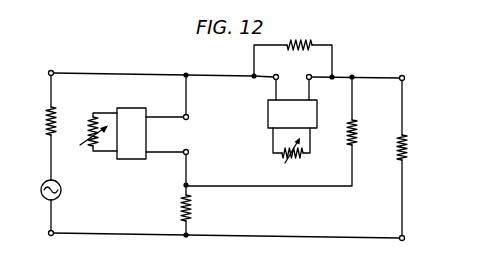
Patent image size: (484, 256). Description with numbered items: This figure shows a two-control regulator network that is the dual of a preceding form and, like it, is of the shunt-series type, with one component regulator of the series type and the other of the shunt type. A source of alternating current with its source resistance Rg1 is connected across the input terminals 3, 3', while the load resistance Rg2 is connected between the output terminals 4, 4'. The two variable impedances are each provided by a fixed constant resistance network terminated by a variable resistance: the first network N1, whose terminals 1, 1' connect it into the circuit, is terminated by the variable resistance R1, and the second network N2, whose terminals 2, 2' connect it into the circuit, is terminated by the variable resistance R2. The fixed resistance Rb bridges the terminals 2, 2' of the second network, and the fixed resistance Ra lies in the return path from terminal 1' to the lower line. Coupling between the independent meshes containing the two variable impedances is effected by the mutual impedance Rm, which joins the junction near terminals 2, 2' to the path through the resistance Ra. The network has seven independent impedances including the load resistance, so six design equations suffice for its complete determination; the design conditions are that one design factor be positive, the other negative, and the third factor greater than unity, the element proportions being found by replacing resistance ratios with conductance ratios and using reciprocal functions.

The input terminal 3 is at (45, 73).
The input terminal 3' is at (43, 233).
The terminal of first network 1 is at (174, 101).
The terminal of first network 1' is at (176, 164).
The terminal of second network 2 is at (276, 77).
The terminal of second network 2' is at (311, 77).
The output terminal 4 is at (409, 77).
The output terminal 4' is at (410, 239).
The source resistance Rg1 is at (34, 128).
The variable resistance R1 is at (93, 132).
The fixed constant resistance network N1 is at (131, 133).
The resistance Ra is at (196, 210).
The resistance Rb is at (293, 50).
The fixed constant resistance network N2 is at (292, 114).
The variable resistance R2 is at (291, 154).
The mutual impedance Rm is at (282, 131).
The load resistance Rg2 is at (415, 158).